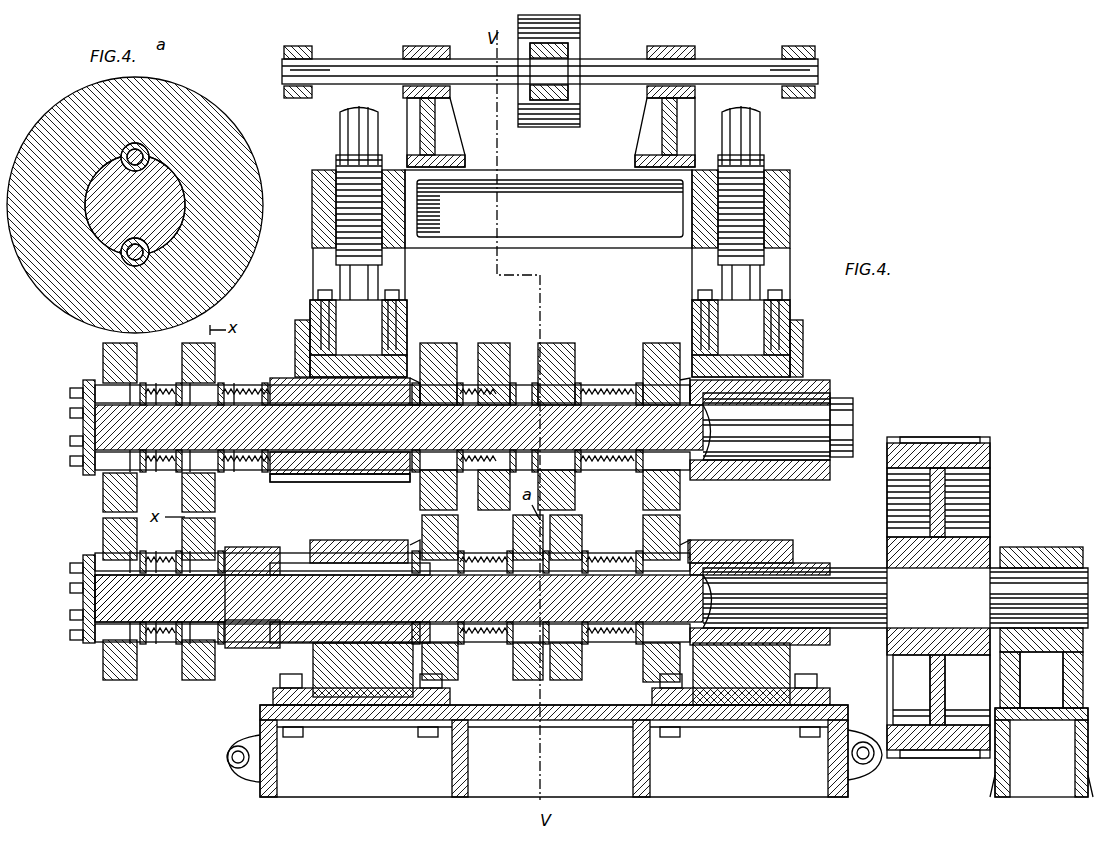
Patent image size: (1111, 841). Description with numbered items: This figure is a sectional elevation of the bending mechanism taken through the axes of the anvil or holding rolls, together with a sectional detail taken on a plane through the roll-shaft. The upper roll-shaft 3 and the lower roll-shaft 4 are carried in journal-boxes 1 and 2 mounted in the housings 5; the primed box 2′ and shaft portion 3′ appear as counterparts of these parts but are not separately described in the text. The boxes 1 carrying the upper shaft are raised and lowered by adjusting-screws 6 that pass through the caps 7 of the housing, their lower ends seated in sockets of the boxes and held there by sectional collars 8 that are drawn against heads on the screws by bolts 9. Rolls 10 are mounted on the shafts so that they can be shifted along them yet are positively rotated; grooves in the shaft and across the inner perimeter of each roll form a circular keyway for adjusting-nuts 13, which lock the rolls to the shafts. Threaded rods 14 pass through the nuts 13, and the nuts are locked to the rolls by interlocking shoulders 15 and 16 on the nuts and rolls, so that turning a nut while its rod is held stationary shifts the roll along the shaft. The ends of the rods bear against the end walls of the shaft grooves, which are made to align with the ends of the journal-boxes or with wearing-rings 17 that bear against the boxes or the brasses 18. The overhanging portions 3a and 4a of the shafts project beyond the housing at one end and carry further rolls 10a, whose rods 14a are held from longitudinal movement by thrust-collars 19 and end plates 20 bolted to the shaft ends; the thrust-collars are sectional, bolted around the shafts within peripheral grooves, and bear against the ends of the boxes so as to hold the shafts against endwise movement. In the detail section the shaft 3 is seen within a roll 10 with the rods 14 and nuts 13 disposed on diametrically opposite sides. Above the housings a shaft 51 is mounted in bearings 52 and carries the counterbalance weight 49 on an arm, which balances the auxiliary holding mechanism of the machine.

In FIG. 4, the journal-box 1 is at (300, 332).
In FIG. 4, the journal-box 2 is at (357, 540).
In FIG. 4, the upper bearing sleeve 2′ is at (340, 445).
In FIG. 4a, the roll-shaft 3 is at (135, 205).
In FIG. 4, the upper shaft body 3′ is at (474, 426).
In FIG. 4, the overhanging portion of the shaft 3a is at (95, 430).
In FIG. 4, the roll-shaft 4 is at (591, 598).
In FIG. 4, the overhanging portion of the shaft 4a is at (95, 598).
In FIG. 4, the housing 5 is at (407, 265).
In FIG. 4, the adjusting-screw 6 is at (340, 138).
In FIG. 4, the cap of the housing 7 is at (312, 210).
In FIG. 4, the sectional collar 8 is at (407, 312).
In FIG. 4, the bolt 9 is at (325, 290).
In FIG. 4a, the roll 10 is at (240, 130).
In FIG. 4, the roll 10 is at (460, 344).
In FIG. 4, the roll 10a is at (137, 352).
In FIG. 4, the adjusting-nut 13 is at (472, 385).
In FIG. 4a, the threaded rod 14 is at (148, 155).
In FIG. 4, the threaded rod 14 is at (618, 388).
In FIG. 4, the threaded rod 14a is at (160, 656).
In FIG. 4a, the interlocking shoulder 15 is at (126, 150).
In FIG. 4, the interlocking shoulder 15 is at (585, 385).
In FIG. 4, the interlocking shoulder 16 is at (540, 386).
In FIG. 4, the wearing-ring 17 is at (412, 380).
In FIG. 4, the brass 18 is at (312, 383).
In FIG. 4, the thrust-collar 19 is at (296, 482).
In FIG. 4, the end plate 20 is at (88, 380).
In FIG. 4, the weight 49 is at (557, 122).
In FIG. 4, the shaft 51 is at (607, 62).
In FIG. 4, the bearing 52 is at (452, 128).